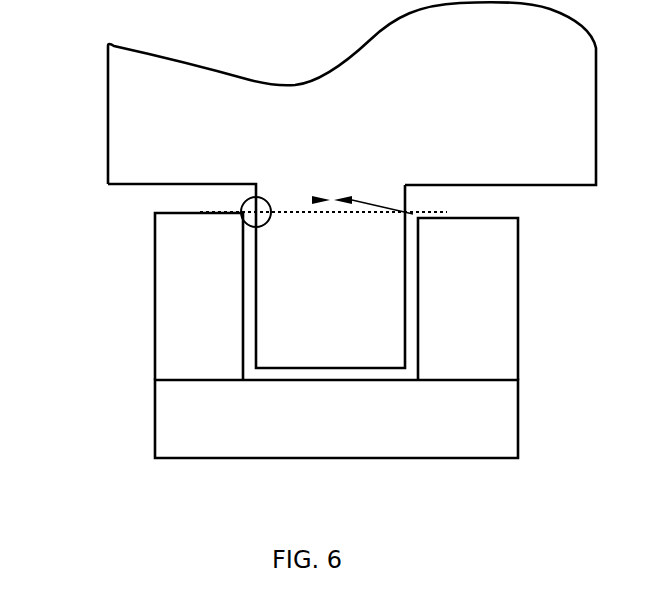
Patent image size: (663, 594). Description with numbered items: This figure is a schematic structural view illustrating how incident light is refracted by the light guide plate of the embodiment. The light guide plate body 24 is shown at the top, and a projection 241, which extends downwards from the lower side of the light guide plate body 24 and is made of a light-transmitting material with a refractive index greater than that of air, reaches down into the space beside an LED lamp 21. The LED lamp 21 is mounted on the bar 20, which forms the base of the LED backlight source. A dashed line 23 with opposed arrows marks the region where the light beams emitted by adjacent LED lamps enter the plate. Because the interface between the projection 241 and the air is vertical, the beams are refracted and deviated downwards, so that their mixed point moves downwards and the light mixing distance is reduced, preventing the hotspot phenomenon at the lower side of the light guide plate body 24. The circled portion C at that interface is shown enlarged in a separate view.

The bar 20 is at (262, 435).
The LED lamp 21 is at (195, 345).
The contact plane between frame and cover 23 is at (330, 200).
The light guide plate body 24 is at (167, 105).
The projection 241 is at (280, 342).
The portion C is at (244, 203).